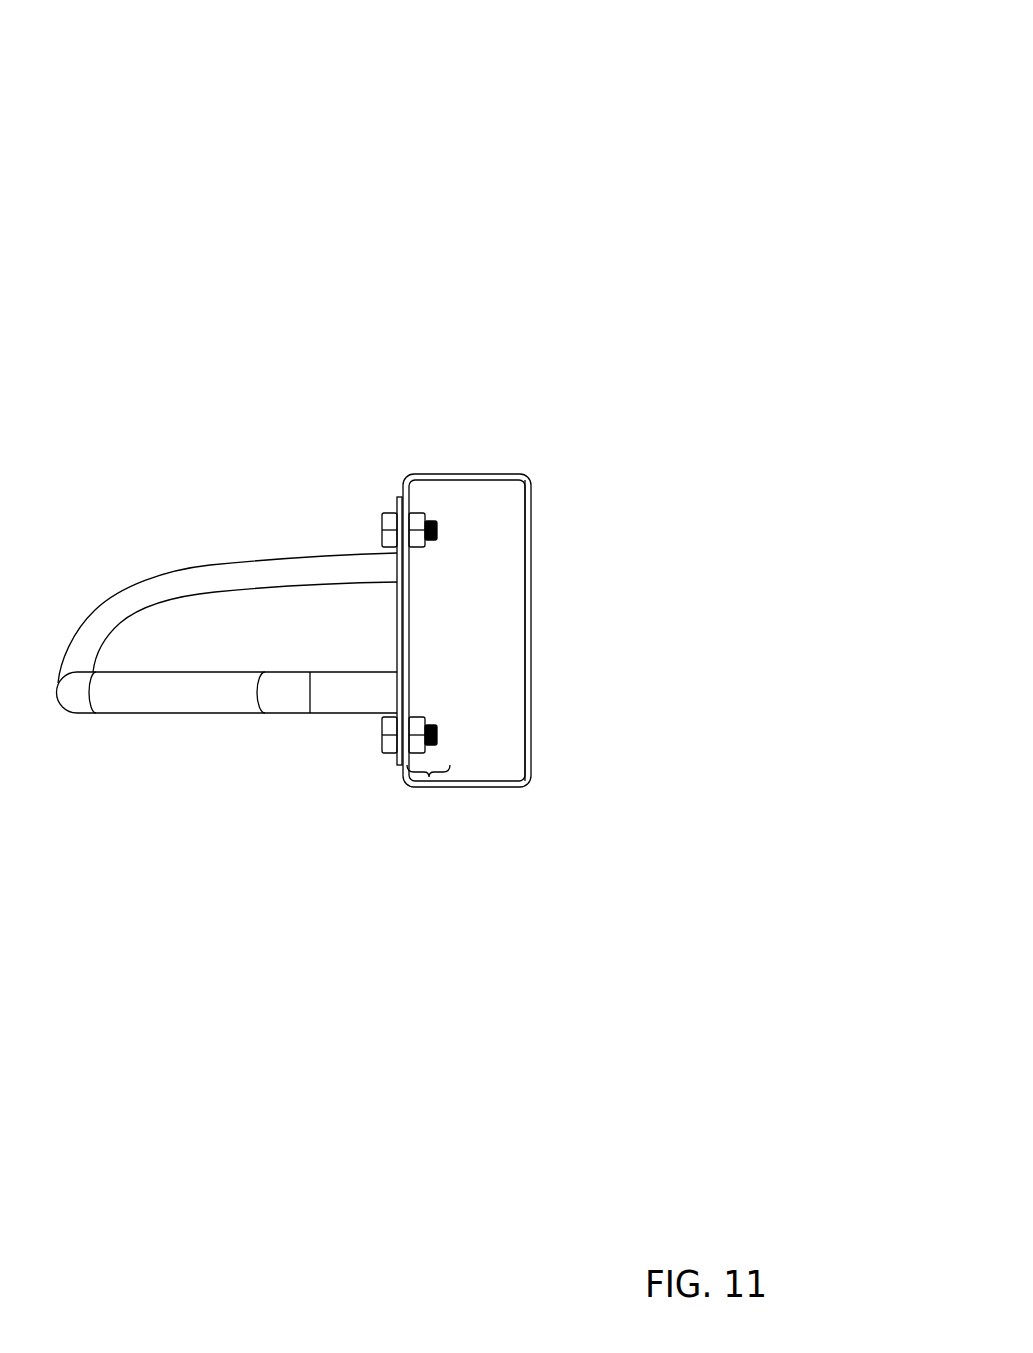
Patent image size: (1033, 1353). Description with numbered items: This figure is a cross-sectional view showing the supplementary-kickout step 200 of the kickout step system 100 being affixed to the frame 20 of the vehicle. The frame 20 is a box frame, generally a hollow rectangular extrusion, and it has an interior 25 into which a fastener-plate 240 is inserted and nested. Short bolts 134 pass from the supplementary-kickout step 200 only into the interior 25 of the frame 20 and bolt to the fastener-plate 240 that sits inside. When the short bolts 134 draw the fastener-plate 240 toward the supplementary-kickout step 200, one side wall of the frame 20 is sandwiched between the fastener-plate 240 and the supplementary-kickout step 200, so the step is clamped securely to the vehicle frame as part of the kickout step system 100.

The kickout step system 100 is at (592, 92).
The frame 20 is at (525, 477).
The interior 25 is at (506, 767).
The short bolts 134 is at (433, 540).
The supplementary-kickout step 200 is at (400, 785).
The fastener-plate 240 is at (429, 781).